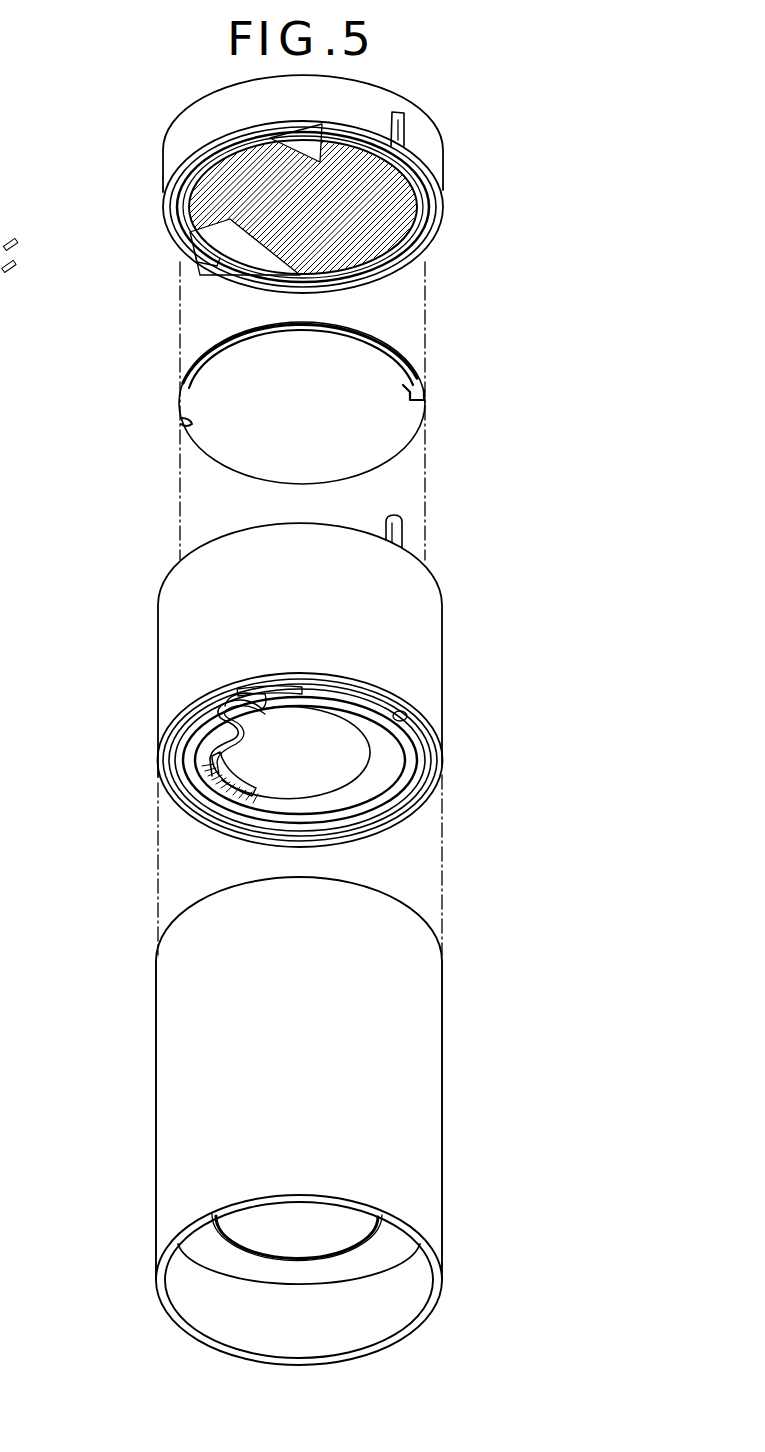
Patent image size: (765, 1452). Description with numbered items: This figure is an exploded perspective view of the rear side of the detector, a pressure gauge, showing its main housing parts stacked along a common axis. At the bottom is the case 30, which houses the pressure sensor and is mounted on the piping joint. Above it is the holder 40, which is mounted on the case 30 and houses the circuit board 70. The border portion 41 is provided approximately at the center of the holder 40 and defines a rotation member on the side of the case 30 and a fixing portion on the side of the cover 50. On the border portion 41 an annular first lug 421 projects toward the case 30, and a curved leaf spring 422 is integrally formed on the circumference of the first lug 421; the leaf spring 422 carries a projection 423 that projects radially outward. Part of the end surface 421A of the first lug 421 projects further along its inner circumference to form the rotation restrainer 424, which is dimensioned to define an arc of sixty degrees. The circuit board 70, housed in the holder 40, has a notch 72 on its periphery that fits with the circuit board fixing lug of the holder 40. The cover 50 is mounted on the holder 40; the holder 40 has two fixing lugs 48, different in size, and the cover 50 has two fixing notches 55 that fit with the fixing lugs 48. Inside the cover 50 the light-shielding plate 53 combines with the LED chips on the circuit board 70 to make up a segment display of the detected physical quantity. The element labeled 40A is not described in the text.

The case 30 is at (432, 1164).
The holder 40 is at (432, 632).
The projection / engaging portion of body 40A is at (410, 723).
The border portion 41 is at (417, 765).
The fixing lug 48 is at (400, 535).
The cover 50 is at (433, 167).
The light-shielding plate 53 is at (423, 258).
The fixing notch 55 is at (402, 138).
The circuit board 70 is at (400, 432).
The notch 72 is at (422, 388).
The first lug 421 is at (373, 785).
The end surface 421A is at (333, 808).
The leaf spring 422 is at (195, 752).
The projection 423 is at (207, 710).
The rotation restrainer 424 is at (225, 793).